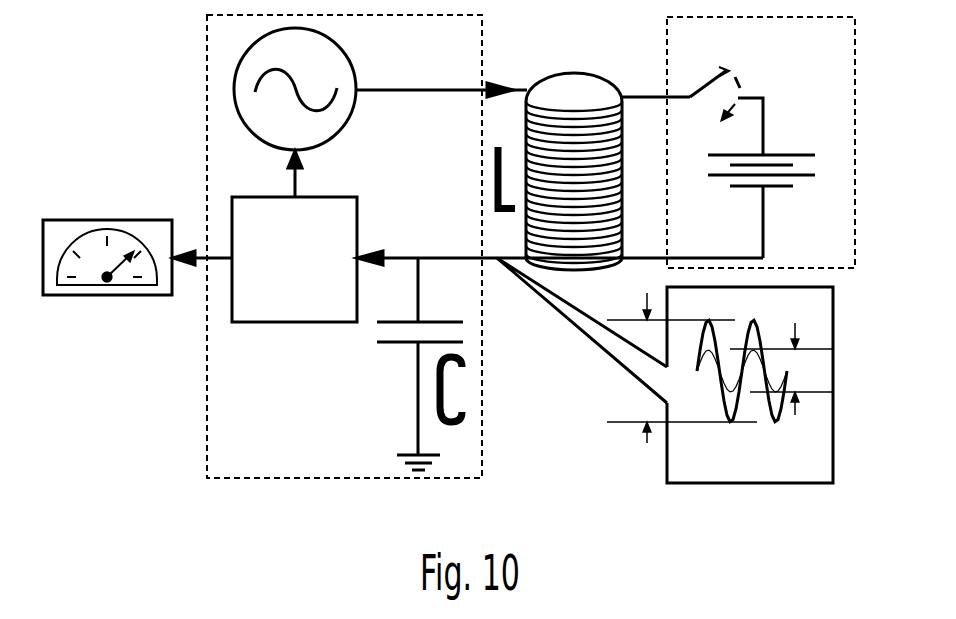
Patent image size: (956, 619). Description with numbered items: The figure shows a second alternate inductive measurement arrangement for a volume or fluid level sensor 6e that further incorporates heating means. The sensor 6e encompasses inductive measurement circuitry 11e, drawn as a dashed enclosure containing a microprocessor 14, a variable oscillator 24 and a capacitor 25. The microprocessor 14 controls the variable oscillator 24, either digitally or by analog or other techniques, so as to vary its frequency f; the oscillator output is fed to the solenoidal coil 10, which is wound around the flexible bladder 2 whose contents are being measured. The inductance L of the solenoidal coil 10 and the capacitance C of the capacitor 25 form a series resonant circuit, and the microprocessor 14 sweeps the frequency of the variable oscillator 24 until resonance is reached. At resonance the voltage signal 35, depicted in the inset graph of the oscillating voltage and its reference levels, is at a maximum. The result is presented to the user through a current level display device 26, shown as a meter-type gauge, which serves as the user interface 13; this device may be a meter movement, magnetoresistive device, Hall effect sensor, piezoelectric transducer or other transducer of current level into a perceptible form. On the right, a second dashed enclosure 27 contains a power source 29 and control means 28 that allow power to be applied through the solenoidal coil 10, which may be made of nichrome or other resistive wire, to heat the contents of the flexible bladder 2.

The inductive measurement circuitry 11e is at (207, 90).
The user interface 13 is at (107, 204).
The current level display device 26 is at (107, 297).
The volume or fluid level sensor 6e is at (107, 264).
The microprocessor 14 is at (293, 325).
The variable oscillator 24 is at (342, 135).
The capacitor 25 is at (390, 355).
The flexible bladder 2 is at (567, 72).
The solenoidal coil 10 is at (622, 97).
The control means 28 is at (740, 82).
The power source 29 is at (783, 153).
The load circuit 27 is at (855, 270).
The voltage signal 35 is at (742, 485).